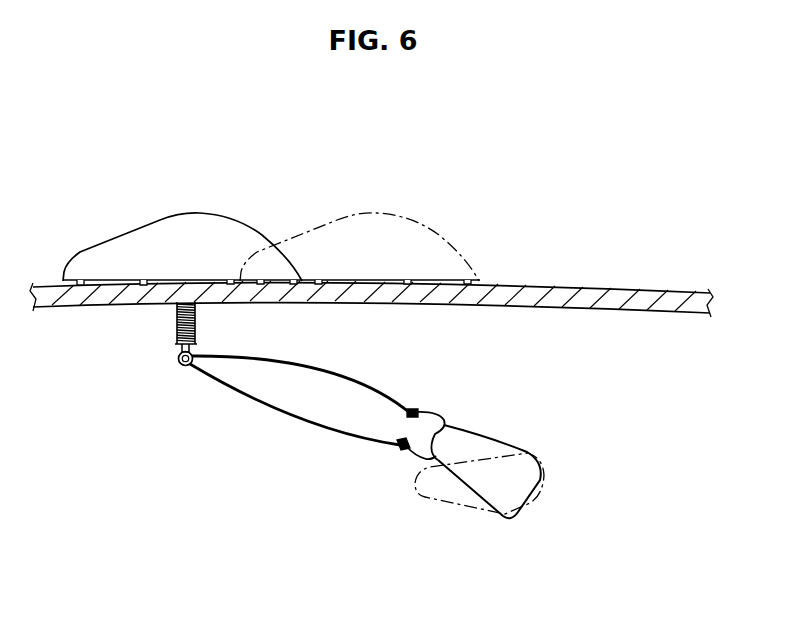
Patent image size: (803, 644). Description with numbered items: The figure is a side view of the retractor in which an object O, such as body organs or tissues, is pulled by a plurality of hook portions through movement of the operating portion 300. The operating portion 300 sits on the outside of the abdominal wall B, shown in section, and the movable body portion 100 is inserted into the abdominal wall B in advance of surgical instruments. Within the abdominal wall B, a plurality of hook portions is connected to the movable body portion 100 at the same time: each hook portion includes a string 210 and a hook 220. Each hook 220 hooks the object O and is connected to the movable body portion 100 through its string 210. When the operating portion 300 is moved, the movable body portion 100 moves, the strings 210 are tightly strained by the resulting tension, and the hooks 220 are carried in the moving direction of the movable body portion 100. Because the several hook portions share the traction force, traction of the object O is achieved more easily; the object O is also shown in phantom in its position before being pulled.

The operating portion 300 is at (235, 212).
The movable body portion 100 is at (177, 326).
The string 210 is at (330, 378).
The hook 220 is at (428, 409).
The abdominal wall B is at (663, 306).
The object O is at (512, 518).